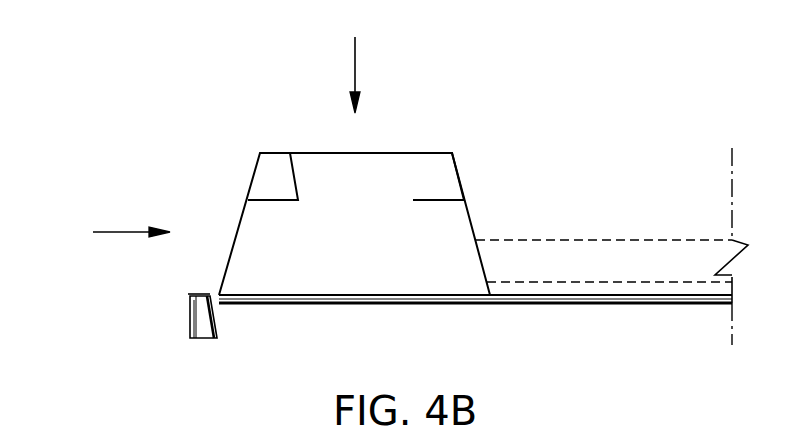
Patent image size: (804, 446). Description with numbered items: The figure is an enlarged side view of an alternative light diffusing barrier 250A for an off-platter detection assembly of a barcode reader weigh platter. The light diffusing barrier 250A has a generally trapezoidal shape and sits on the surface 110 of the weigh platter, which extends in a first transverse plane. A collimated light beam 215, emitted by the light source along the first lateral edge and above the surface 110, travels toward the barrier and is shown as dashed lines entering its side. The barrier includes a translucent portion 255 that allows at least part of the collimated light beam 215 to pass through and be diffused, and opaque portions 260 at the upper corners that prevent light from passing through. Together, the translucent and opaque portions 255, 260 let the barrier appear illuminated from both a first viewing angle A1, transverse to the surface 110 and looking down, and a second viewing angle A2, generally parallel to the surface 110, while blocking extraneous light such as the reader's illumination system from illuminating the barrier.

The surface 110 is at (583, 304).
The collimated light beam 215 is at (652, 268).
The light diffusing barrier 250A is at (273, 143).
The translucent portion 255 is at (457, 212).
The opaque portion 260 is at (265, 180).
The first viewing angle A1 is at (355, 65).
The second viewing angle A2 is at (122, 232).